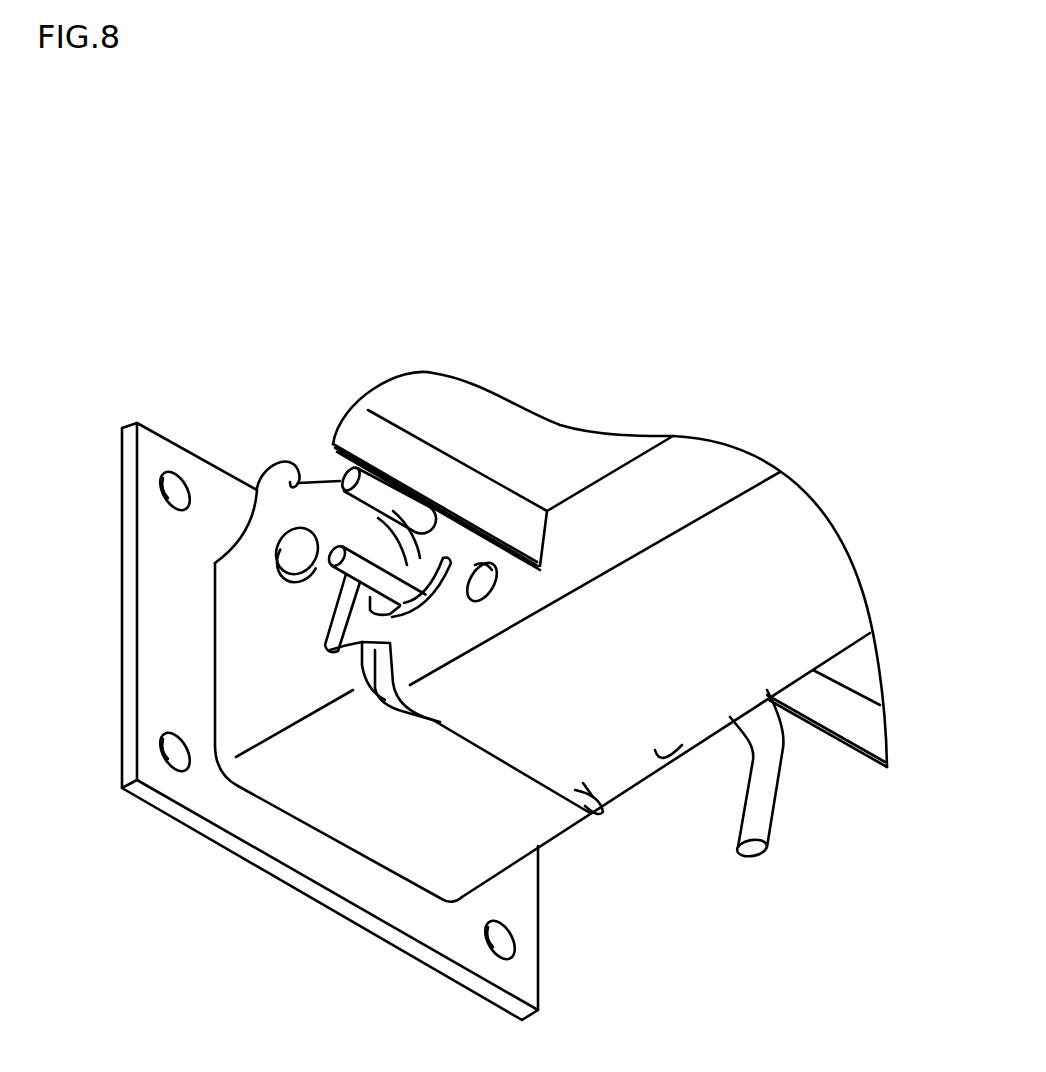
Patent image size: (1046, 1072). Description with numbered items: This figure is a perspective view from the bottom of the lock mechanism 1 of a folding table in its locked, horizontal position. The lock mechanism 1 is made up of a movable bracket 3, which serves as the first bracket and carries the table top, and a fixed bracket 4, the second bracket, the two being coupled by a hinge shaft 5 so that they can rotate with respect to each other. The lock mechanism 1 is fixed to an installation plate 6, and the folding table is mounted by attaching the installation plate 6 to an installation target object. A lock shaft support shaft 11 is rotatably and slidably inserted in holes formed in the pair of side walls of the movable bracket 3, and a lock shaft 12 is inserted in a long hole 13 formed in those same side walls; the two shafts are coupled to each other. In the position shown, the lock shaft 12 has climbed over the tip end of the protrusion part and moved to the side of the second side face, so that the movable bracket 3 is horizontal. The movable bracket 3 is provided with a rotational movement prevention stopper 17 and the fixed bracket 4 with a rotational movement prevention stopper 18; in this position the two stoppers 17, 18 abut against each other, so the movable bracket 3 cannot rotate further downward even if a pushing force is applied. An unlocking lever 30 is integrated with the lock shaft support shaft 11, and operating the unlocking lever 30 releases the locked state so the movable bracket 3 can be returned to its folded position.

The lock mechanism 1 is at (740, 955).
The movable bracket 3 is at (642, 512).
The fixed bracket 4 is at (257, 670).
The hinge shaft 5 is at (281, 548).
The installation plate 6 is at (136, 422).
The lock shaft support shaft 11 is at (327, 490).
The lock shaft 12 is at (333, 540).
The long hole 13 is at (434, 555).
The rotational movement prevention stopper 17 is at (522, 765).
The rotational movement prevention stopper 18 is at (483, 752).
The unlocking lever 30 is at (777, 807).